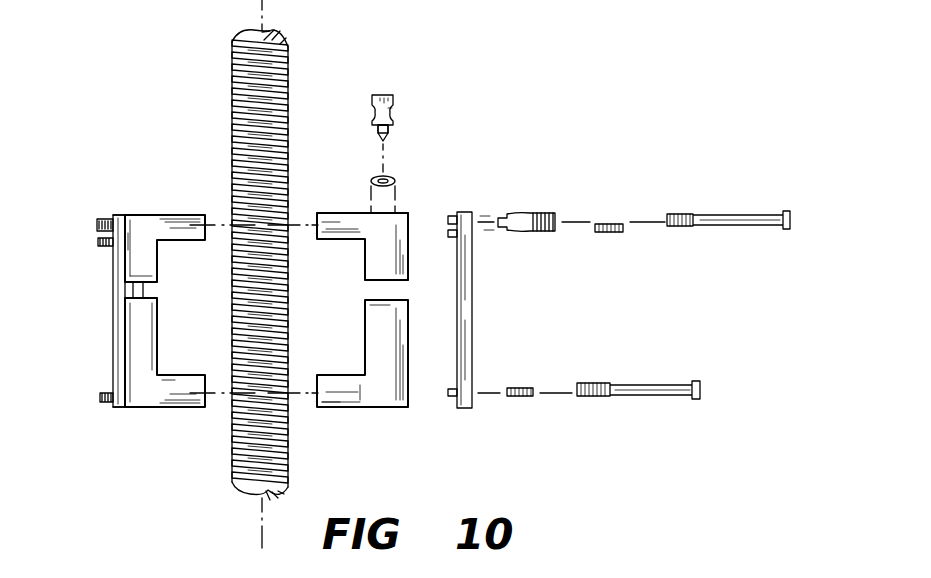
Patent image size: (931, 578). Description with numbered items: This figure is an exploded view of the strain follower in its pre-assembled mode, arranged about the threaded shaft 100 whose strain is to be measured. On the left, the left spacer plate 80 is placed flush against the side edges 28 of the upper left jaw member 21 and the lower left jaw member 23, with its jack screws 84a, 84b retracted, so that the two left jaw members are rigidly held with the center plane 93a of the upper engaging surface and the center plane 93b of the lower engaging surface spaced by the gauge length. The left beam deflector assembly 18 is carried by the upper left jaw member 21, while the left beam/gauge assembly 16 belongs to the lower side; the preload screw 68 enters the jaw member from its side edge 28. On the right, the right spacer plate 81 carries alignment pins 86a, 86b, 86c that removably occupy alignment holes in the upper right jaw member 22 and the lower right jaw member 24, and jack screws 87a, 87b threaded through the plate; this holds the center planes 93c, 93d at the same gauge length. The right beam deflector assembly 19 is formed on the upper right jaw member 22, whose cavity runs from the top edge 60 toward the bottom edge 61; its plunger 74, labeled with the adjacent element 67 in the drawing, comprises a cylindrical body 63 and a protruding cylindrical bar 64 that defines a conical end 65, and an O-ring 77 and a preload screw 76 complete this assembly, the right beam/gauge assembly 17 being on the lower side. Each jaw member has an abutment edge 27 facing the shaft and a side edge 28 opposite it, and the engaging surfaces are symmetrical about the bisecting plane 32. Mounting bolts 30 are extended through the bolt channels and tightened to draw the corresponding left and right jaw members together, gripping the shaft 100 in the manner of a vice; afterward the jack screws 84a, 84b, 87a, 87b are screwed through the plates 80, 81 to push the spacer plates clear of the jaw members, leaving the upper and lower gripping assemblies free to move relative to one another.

The bisecting plane 32 is at (266, 13).
The threaded shaft 100 is at (284, 474).
The plunger 74 is at (383, 94).
The stud head 67 is at (400, 104).
The cylindrical body 63 is at (388, 126).
The cylindrical bar 64 is at (143, 294).
The conical end 65 is at (385, 142).
The O-ring 77 is at (378, 176).
The abutment edge 27 is at (202, 222).
The right jaw member 22 is at (332, 215).
The top edge 60 is at (138, 213).
The side edge 28 is at (112, 216).
The alignment pin 86a is at (452, 214).
The alignment pin 86b is at (452, 236).
The alignment pin 86c is at (450, 400).
The preload screw 76 is at (540, 210).
The mounting bolt 30 is at (744, 196).
The jack screw 87a is at (604, 233).
The jack screw 87b is at (516, 388).
The right spacer plate 81 is at (466, 312).
The center plane 93a is at (176, 226).
The center plane 93b is at (163, 405).
The center plane 93c is at (342, 232).
The center plane 93d is at (346, 398).
The right jaw member 24 is at (338, 406).
The right beam deflector assembly 19 is at (364, 258).
The right beam/gauge assembly 17 is at (365, 331).
The bottom edge 61 is at (148, 284).
The preload screw 68 is at (100, 218).
The left jaw member 21 is at (164, 214).
The left jaw member 23 is at (172, 406).
The jack screw 84a is at (106, 248).
The jack screw 84b is at (108, 392).
The left beam deflector assembly 18 is at (162, 270).
The left beam/gauge assembly 16 is at (158, 348).
The left spacer plate 80 is at (113, 320).